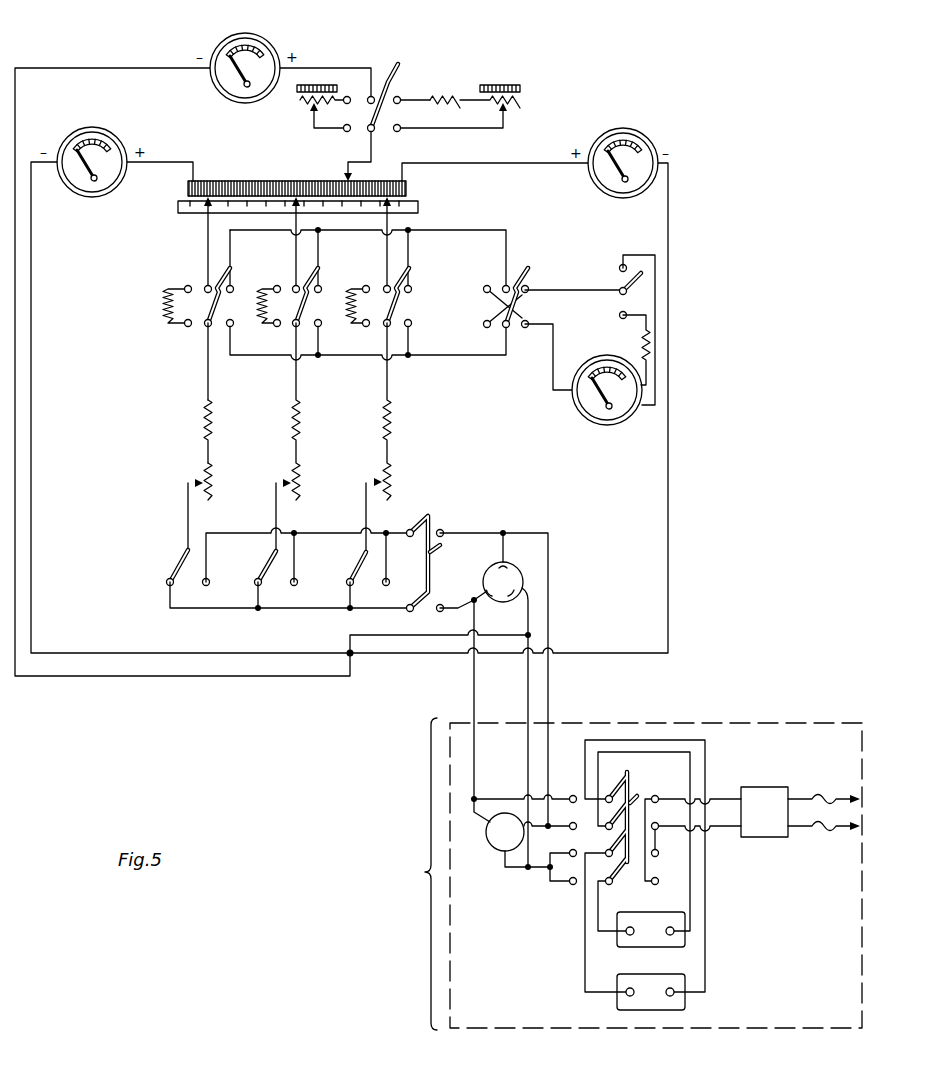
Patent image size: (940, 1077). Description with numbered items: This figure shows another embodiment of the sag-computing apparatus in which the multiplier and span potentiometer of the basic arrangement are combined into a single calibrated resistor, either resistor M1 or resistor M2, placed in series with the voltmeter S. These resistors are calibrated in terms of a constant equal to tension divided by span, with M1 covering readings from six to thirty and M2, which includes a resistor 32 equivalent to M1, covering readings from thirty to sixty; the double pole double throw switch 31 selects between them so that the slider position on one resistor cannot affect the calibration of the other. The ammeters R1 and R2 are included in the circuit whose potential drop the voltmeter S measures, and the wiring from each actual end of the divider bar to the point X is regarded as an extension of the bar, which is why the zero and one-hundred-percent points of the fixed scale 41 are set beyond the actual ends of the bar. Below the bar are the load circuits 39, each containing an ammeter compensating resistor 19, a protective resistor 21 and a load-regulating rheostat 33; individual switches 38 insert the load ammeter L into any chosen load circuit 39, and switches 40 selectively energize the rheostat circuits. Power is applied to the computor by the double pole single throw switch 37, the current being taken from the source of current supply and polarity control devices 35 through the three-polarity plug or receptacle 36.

The voltmeter S is at (270, 43).
The ammeter R1 is at (114, 136).
The ammeter R2 is at (650, 142).
The load ammeter L is at (604, 425).
The resistor M1 is at (318, 84).
The resistor M2 is at (524, 80).
The double pole double throw switch 31 is at (380, 72).
The resistor 32 is at (447, 105).
The fixed scale 41 is at (410, 206).
The switch 38 is at (213, 284).
The ammeter compensating resistor 19 is at (160, 309).
The load circuit 39 is at (207, 360).
The protective resistor 21 is at (205, 415).
The load-regulating rheostat 33 is at (205, 470).
The switch 40 is at (177, 565).
The three-polarity plug or receptacle 36 is at (524, 576).
The point X is at (348, 652).
The double pole single throw switch 37 is at (421, 612).
The source of current supply and polarity control devices 35 is at (426, 874).